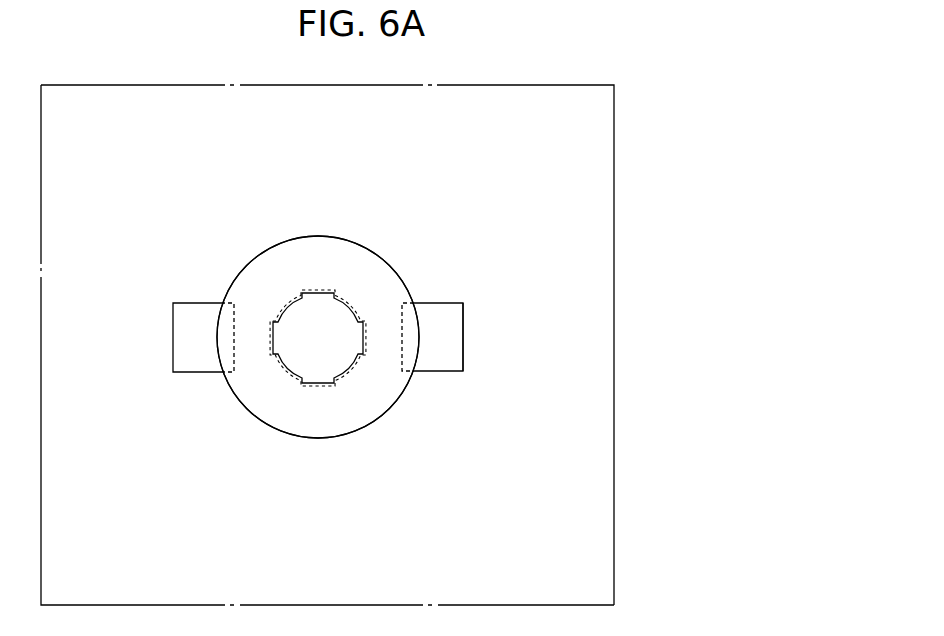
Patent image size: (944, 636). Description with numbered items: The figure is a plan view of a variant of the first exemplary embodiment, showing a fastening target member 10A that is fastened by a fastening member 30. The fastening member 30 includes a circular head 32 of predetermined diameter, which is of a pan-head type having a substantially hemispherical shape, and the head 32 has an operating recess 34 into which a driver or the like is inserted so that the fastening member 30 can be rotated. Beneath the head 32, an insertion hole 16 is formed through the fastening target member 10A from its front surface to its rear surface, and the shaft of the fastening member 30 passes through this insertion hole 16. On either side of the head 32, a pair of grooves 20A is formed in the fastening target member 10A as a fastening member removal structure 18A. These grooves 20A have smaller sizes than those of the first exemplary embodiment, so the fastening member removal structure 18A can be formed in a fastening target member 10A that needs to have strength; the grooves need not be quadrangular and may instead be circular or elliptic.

The fastening target member 10A is at (538, 135).
The insertion hole 16 is at (340, 299).
The fastening member removal structure 18A is at (475, 325).
The pair of grooves 20A is at (191, 346).
The fastening member 30 is at (279, 432).
The head 32 is at (340, 421).
The operating recess 34 is at (299, 357).